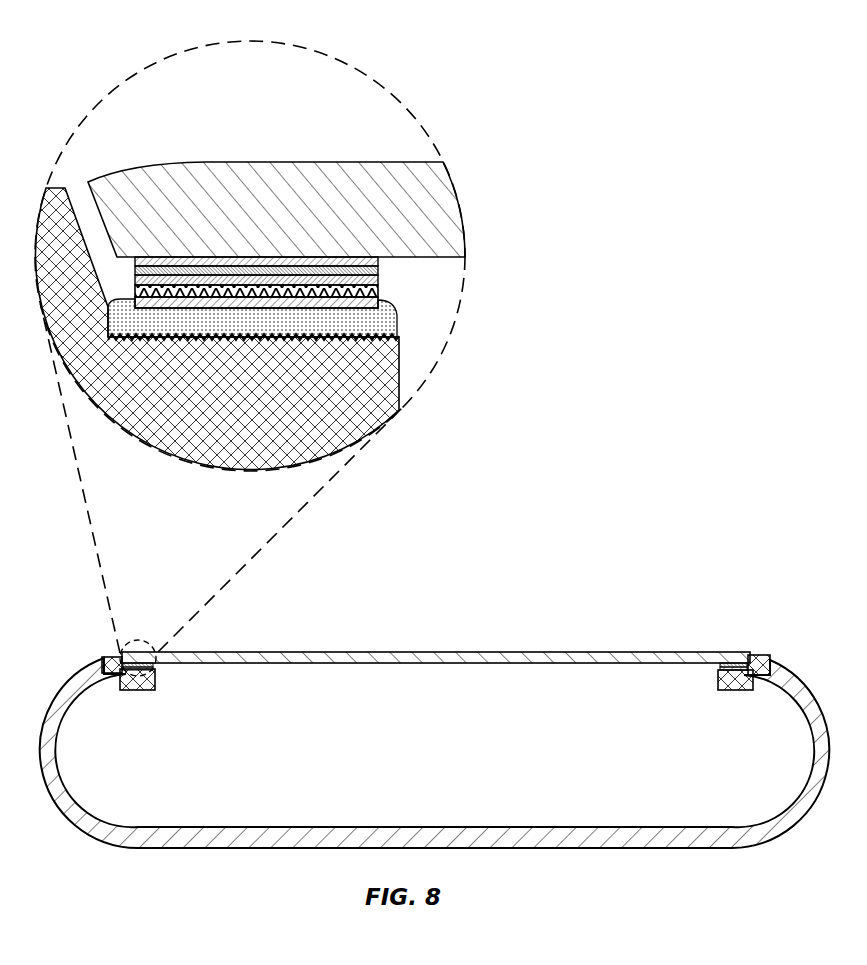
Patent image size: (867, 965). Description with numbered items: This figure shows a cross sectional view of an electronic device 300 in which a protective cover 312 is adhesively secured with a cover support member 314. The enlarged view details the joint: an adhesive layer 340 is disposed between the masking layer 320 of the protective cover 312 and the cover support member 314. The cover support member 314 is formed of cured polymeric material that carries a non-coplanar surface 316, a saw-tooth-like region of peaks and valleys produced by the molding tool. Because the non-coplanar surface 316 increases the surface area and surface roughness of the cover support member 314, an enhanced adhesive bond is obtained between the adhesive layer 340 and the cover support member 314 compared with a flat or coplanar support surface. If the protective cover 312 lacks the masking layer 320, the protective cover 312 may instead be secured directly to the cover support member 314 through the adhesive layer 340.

The electronic device 300 is at (674, 468).
The protective cover 312 is at (302, 218).
The cover support member 314 is at (264, 401).
The non-coplanar surface 316 is at (420, 326).
The masking layer 320 is at (406, 270).
The adhesive layer 340 is at (380, 308).